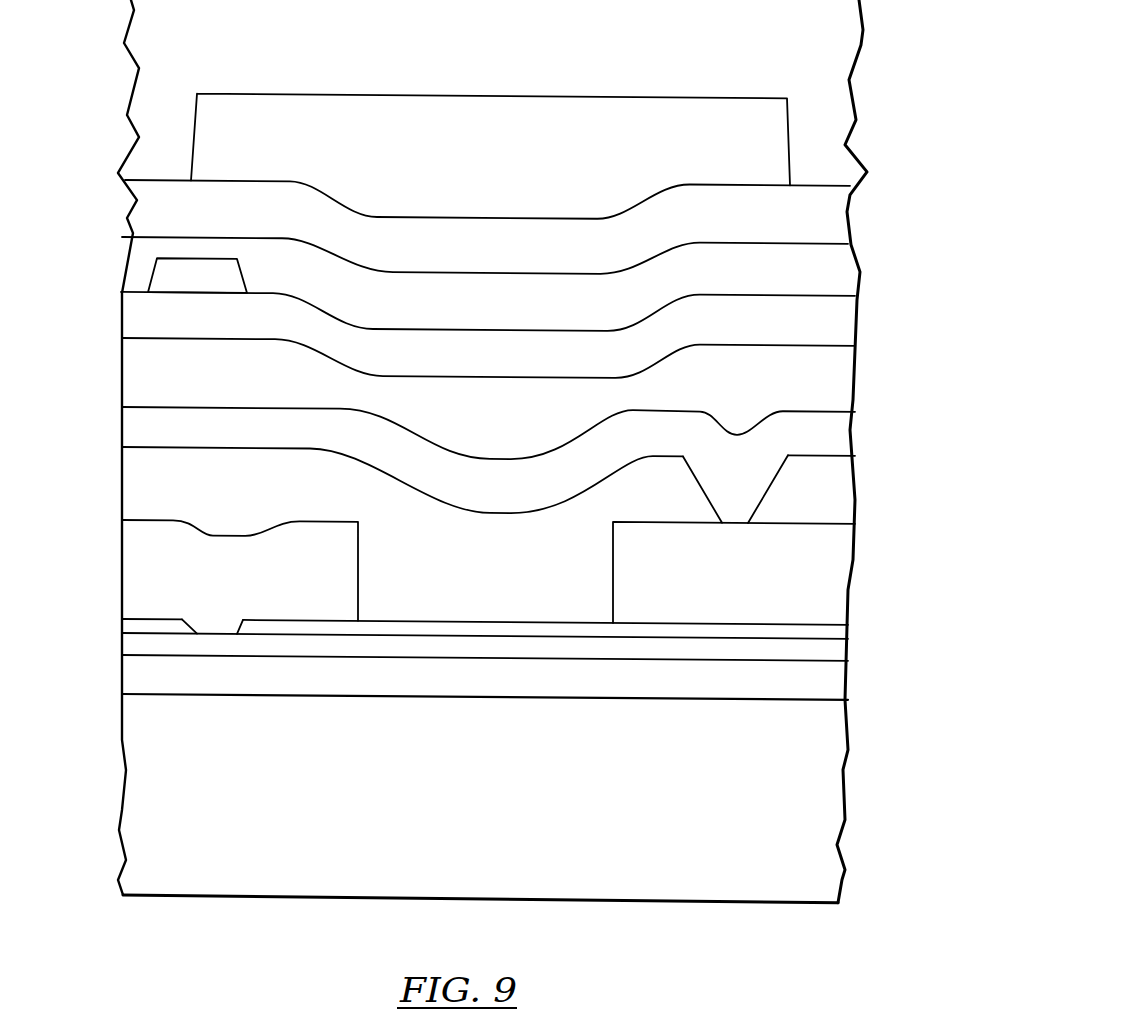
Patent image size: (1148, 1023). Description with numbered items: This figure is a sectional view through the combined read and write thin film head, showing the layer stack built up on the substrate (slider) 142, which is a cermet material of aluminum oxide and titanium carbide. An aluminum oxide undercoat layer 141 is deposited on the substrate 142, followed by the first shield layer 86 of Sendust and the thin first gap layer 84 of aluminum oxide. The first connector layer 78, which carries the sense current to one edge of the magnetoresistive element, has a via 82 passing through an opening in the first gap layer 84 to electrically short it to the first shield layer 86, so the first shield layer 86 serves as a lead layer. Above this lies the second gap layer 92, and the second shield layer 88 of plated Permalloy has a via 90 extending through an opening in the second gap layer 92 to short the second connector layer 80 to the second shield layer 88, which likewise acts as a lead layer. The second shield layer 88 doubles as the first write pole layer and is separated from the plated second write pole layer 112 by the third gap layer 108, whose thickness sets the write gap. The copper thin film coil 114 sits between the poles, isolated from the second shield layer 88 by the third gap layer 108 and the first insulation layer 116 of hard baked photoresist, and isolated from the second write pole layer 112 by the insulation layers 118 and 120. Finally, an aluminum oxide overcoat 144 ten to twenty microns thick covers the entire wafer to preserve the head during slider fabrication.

The overcoat 144 is at (782, 57).
The second write pole layer 112 is at (623, 144).
The insulation layer 120 is at (795, 217).
The insulation layer 118 is at (793, 270).
The first insulation layer 116 is at (793, 317).
The third gap layer 108 is at (793, 377).
The second shield layer 88 is at (790, 435).
The via 90 is at (743, 492).
The second gap layer 92 is at (173, 477).
The first connector layer 78 is at (173, 572).
The second connector layer 80 is at (790, 562).
The via 82 is at (212, 623).
The first gap layer 84 is at (790, 623).
The first shield layer 86 is at (790, 643).
The undercoat layer 141 is at (780, 683).
The substrate (slider) 142 is at (730, 805).
The thin film coil 114 is at (195, 258).